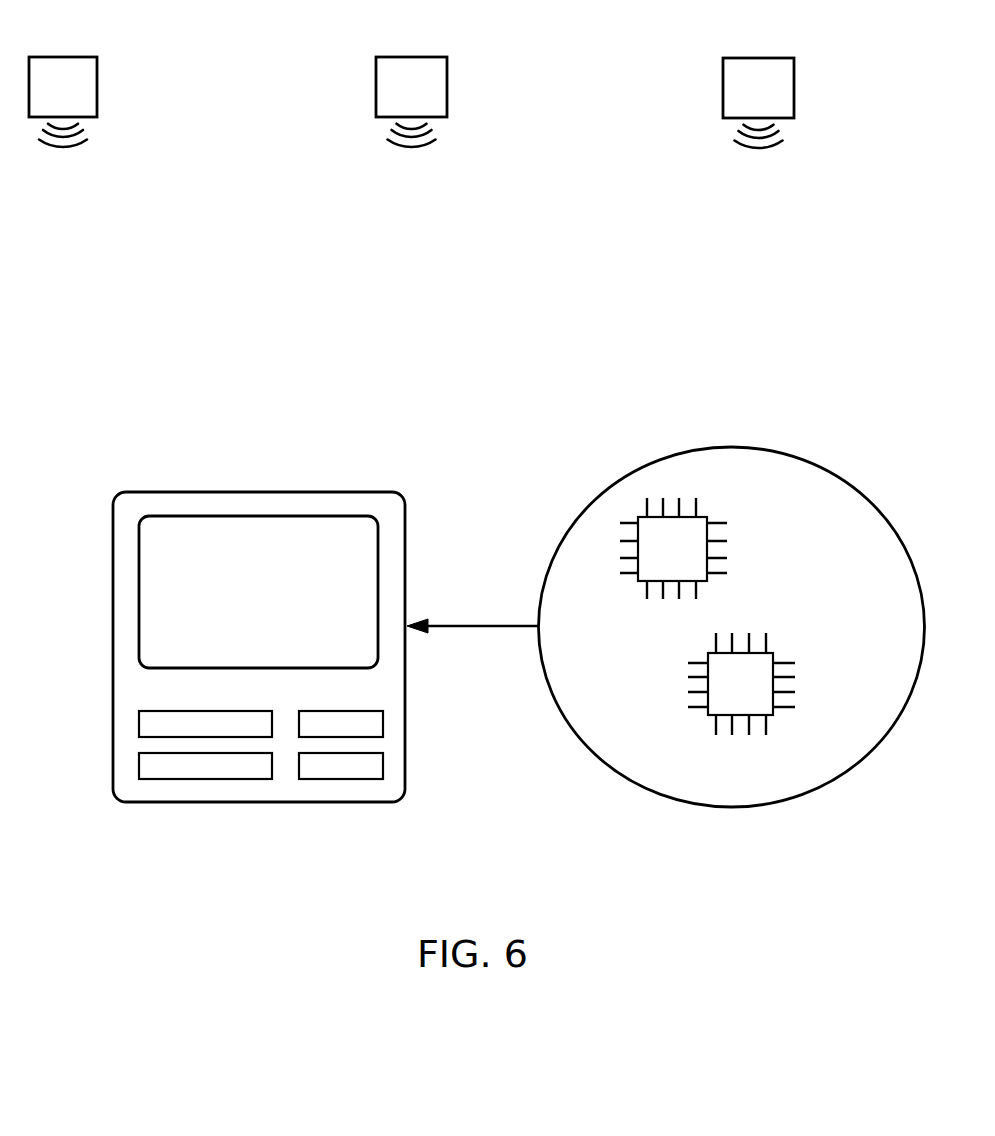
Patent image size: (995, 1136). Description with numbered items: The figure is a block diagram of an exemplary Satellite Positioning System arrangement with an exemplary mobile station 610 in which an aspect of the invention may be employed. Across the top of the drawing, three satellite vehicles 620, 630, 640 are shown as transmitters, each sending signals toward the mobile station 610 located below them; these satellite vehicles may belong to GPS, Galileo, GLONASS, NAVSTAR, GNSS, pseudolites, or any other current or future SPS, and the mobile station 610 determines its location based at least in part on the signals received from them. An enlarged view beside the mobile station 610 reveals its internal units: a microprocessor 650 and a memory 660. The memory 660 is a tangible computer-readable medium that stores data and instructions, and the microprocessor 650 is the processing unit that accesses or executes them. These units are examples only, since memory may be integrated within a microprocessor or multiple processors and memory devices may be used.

The mobile station 610 is at (342, 491).
The satellite vehicle 620 is at (62, 57).
The satellite vehicle 630 is at (412, 57).
The satellite vehicle 640 is at (759, 58).
The microprocessor 650 is at (707, 581).
The memory 660 is at (773, 715).